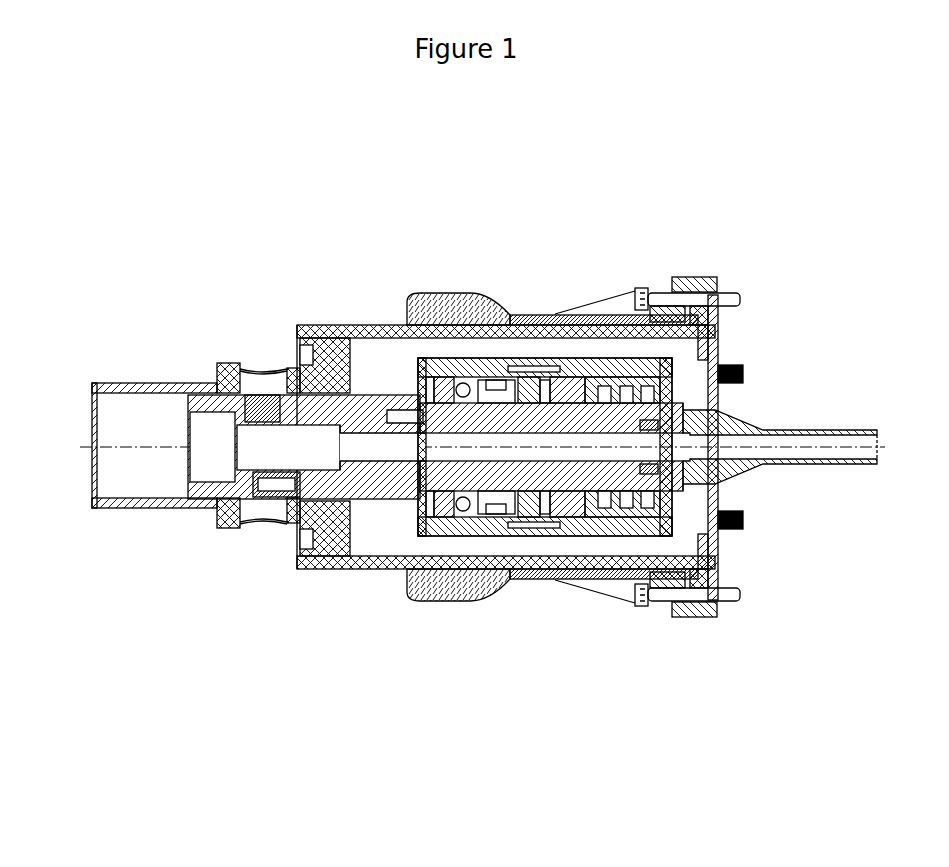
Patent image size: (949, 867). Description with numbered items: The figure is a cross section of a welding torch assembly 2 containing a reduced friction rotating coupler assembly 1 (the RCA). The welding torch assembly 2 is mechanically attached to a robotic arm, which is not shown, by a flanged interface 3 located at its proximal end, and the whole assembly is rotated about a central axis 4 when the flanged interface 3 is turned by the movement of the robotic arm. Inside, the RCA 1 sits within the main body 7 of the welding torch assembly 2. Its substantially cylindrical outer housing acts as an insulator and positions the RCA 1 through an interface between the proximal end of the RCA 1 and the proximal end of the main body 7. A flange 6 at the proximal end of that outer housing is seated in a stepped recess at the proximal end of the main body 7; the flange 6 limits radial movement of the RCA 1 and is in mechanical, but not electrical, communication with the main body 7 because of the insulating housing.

The reduced friction rotating coupler assembly 1 is at (410, 357).
The welding torch assembly 2 is at (535, 290).
The flanged interface 3 is at (735, 322).
The central axis 4 is at (140, 430).
The flange 6 is at (730, 557).
The main body 7 is at (315, 572).